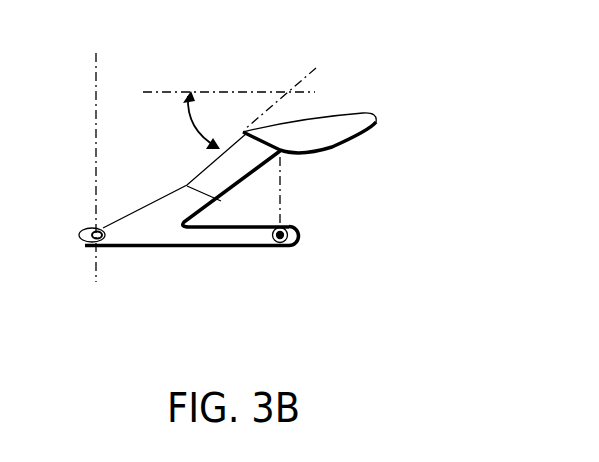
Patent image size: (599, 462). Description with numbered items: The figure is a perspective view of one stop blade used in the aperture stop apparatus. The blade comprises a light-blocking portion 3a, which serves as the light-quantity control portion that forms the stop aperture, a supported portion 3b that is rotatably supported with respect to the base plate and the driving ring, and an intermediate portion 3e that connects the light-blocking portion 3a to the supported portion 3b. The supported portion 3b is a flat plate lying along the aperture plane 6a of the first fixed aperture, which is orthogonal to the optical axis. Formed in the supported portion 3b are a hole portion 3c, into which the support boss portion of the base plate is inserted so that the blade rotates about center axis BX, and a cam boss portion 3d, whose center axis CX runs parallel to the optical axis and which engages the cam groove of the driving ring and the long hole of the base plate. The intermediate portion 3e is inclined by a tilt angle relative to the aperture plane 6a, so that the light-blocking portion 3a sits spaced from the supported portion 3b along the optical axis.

The light-blocking portion 3a is at (368, 128).
The supported portion 3b is at (192, 246).
The hole portion 3c is at (80, 236).
The cam boss portion 3d is at (285, 224).
The intermediate portion 3e is at (232, 174).
The aperture plane 6a is at (227, 95).
The center axis of the support boss portion BX is at (95, 88).
The center axis of the cam boss portion CX is at (282, 203).